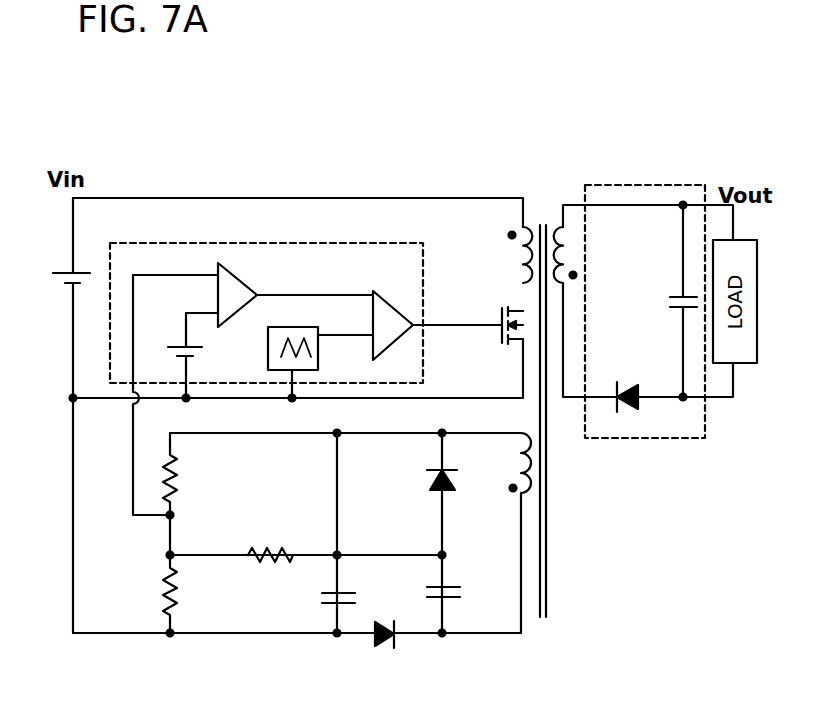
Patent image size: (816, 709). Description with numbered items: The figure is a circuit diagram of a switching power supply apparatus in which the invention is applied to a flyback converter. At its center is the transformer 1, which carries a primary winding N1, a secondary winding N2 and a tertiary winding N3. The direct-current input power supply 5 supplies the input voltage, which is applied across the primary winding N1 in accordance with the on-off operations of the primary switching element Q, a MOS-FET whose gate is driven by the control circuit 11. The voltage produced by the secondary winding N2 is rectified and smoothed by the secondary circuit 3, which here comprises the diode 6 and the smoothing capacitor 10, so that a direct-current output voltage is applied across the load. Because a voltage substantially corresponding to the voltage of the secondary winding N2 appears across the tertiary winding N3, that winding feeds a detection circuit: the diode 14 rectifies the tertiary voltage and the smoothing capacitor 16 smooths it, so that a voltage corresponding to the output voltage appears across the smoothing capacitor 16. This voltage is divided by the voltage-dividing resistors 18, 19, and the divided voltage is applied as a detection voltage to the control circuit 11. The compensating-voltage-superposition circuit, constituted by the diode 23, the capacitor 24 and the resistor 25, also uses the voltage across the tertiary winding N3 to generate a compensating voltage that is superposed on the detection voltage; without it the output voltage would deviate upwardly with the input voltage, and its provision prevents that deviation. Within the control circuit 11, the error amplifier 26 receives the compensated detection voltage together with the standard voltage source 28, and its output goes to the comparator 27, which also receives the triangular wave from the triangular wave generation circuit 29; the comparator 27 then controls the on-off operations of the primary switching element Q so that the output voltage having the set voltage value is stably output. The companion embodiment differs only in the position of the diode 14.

The transformer 1 is at (547, 218).
The secondary circuit 3 is at (628, 183).
The input power supply 5 is at (60, 270).
The diode 6 is at (623, 380).
The smoothing capacitor 10 is at (675, 293).
The control circuit 11 is at (270, 242).
The diode 14 is at (385, 622).
The smoothing capacitor 16 is at (328, 610).
The voltage-dividing resistor 18 is at (163, 480).
The voltage-dividing resistor 19 is at (163, 582).
The diode 23 is at (448, 493).
The capacitor 24 is at (450, 598).
The resistor 25 is at (270, 550).
The error amplifier 26 is at (249, 270).
The comparator 27 is at (378, 291).
The standard voltage source 28 is at (168, 350).
The triangular wave generation circuit 29 is at (268, 363).
The primary switching element Q is at (500, 342).
The primary winding N1 is at (522, 253).
The secondary winding N2 is at (565, 258).
The tertiary winding N3 is at (535, 463).